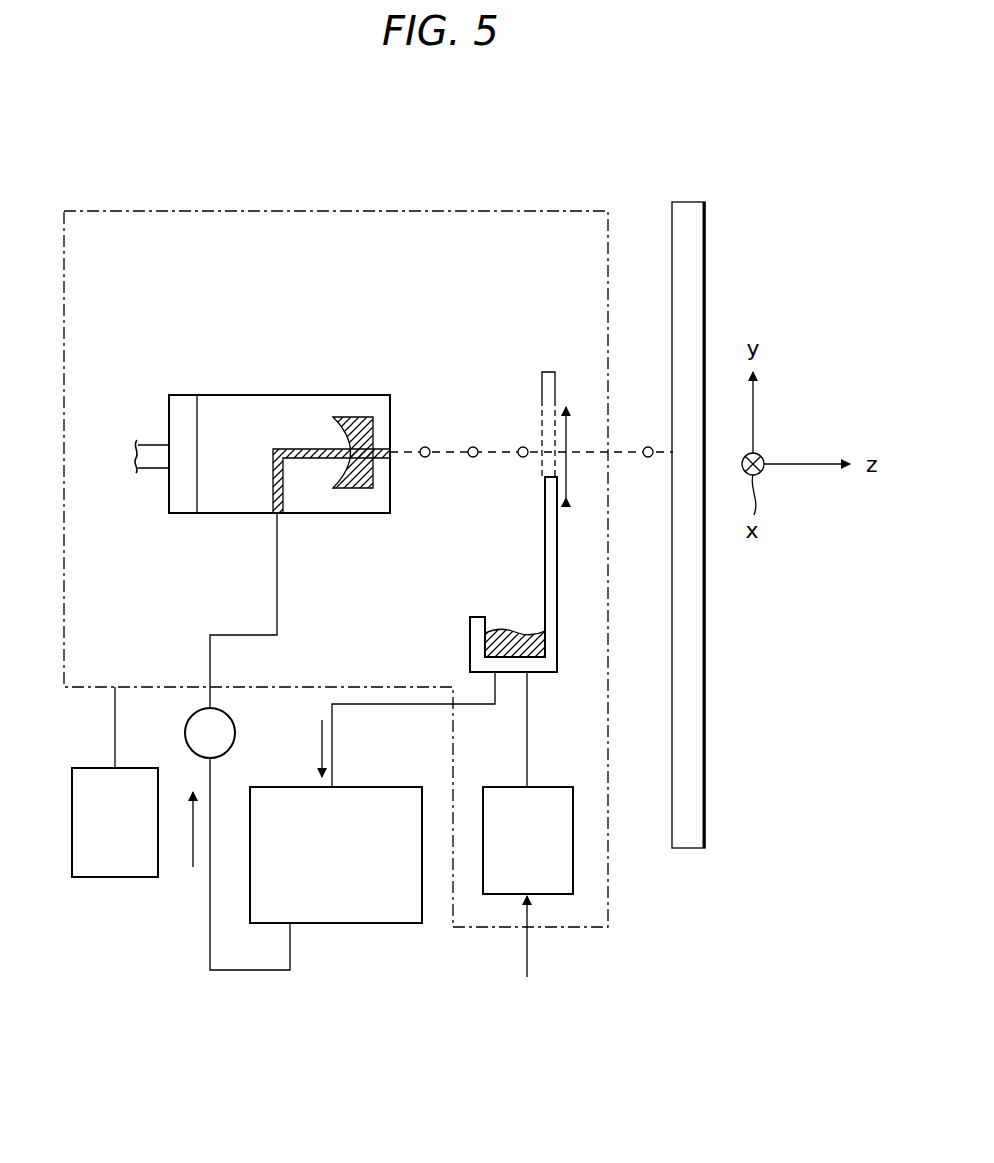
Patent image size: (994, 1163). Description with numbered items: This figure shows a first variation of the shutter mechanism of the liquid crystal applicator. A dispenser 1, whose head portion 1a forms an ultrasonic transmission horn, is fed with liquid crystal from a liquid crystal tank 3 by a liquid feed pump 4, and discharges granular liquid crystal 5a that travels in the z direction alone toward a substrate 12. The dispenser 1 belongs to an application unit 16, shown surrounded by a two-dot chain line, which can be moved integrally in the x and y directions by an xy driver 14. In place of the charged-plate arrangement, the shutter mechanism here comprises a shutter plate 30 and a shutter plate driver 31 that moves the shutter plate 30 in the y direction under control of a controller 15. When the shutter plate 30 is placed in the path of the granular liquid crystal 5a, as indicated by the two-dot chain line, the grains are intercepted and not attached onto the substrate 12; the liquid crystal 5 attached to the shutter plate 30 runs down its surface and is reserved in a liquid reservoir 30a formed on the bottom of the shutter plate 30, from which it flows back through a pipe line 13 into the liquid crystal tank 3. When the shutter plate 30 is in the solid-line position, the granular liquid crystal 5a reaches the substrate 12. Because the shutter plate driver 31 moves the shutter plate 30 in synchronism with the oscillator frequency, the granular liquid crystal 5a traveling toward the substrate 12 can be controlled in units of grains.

The dispenser 1 is at (262, 456).
The head portion 1a is at (230, 513).
The application unit 16 is at (178, 513).
The liquid crystal tank 3 is at (340, 923).
The liquid feed pump 4 is at (237, 731).
The liquid crystal 5 is at (519, 633).
The granular liquid crystal 5a is at (473, 446).
The substrate 12 is at (705, 232).
The pipe line 13 is at (335, 733).
The xy driver 14 is at (113, 877).
The controller 15 is at (527, 953).
The shutter plate 30 is at (484, 486).
The liquid reservoir 30a is at (494, 620).
The shutter plate driver 31 is at (573, 835).